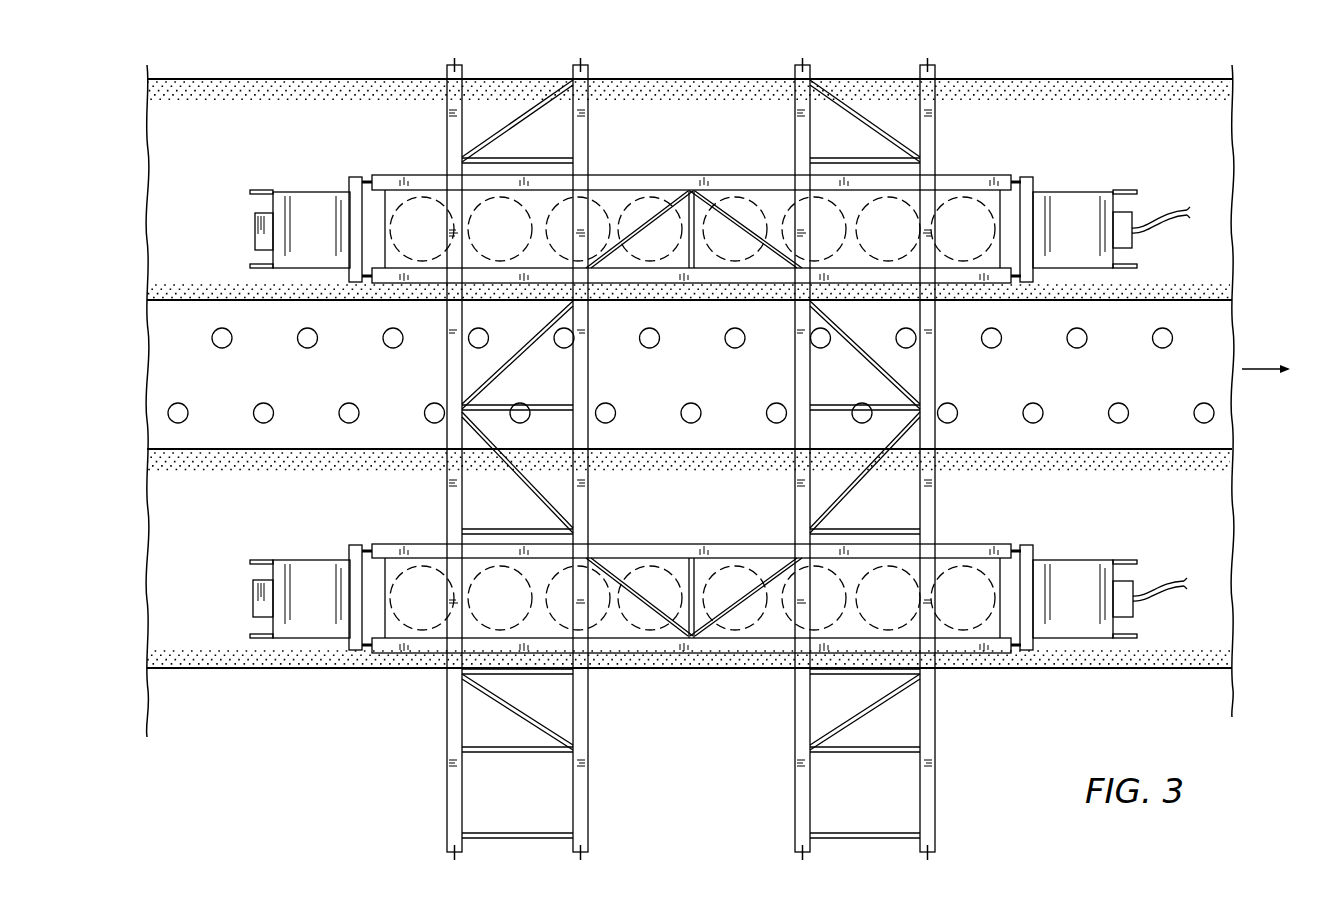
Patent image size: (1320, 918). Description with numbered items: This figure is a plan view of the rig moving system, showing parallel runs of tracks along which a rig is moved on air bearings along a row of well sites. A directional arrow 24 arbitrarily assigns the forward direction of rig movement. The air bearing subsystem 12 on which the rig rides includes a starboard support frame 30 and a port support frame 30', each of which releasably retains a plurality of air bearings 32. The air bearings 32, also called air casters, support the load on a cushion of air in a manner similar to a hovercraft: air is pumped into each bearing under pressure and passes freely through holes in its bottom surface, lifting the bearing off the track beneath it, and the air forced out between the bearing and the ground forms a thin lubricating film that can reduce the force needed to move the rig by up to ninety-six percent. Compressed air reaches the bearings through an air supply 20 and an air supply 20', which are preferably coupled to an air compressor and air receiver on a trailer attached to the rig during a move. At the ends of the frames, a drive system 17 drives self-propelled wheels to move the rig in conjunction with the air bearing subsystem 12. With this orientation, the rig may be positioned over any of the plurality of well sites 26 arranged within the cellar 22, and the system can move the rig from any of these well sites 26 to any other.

The air bearing subsystem 12 is at (428, 748).
The drive system 17 is at (310, 207).
The air supply 20 is at (1169, 605).
The air supply 20' is at (1174, 234).
The cellar 22 is at (1019, 397).
The directional arrow 24 is at (1259, 372).
The well sites 26 is at (233, 335).
The starboard support frame 30 is at (691, 630).
The port support frame 30' is at (691, 206).
The air bearings 32 is at (422, 197).